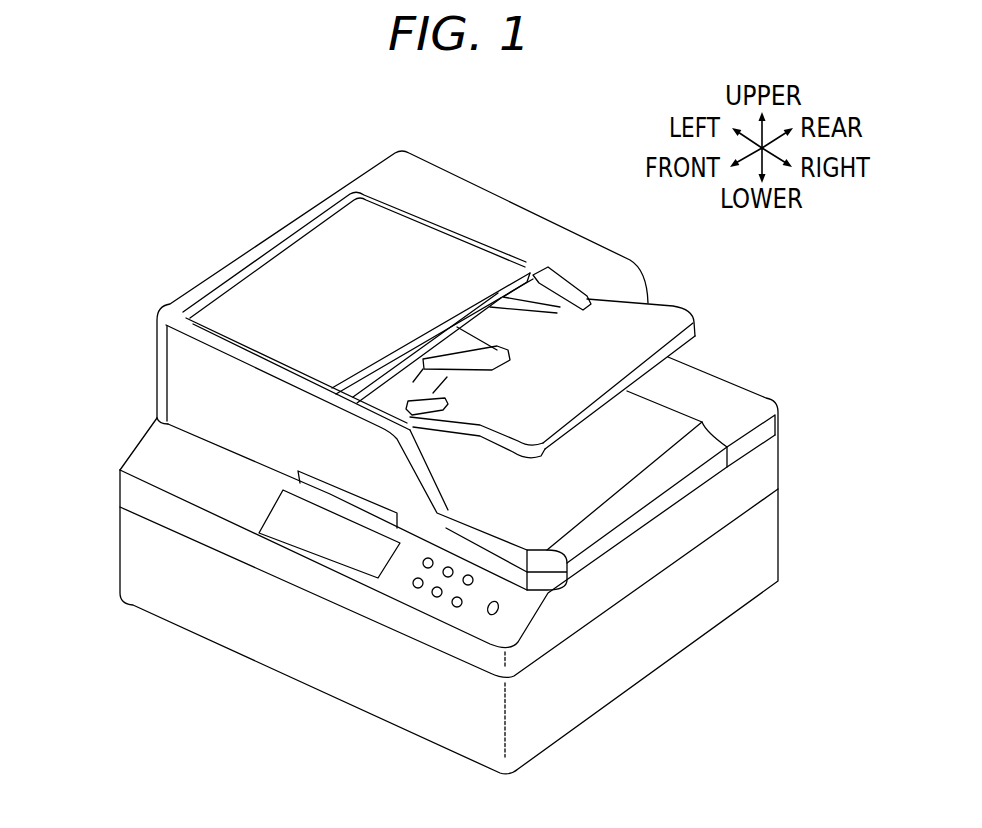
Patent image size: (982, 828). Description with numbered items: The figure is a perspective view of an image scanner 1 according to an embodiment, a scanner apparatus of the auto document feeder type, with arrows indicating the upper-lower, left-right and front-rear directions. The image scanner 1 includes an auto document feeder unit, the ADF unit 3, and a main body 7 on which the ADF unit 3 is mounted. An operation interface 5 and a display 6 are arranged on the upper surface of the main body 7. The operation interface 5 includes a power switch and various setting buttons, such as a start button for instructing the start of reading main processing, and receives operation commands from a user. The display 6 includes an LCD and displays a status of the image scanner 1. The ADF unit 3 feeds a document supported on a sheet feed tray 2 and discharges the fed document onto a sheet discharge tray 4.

The image scanner 1 is at (168, 265).
The sheet feed tray 2 is at (545, 415).
The auto document feeder unit 3 is at (212, 408).
The sheet discharge tray 4 is at (475, 493).
The operation interface 5 is at (432, 598).
The display 6 is at (320, 536).
The main body 7 is at (764, 473).